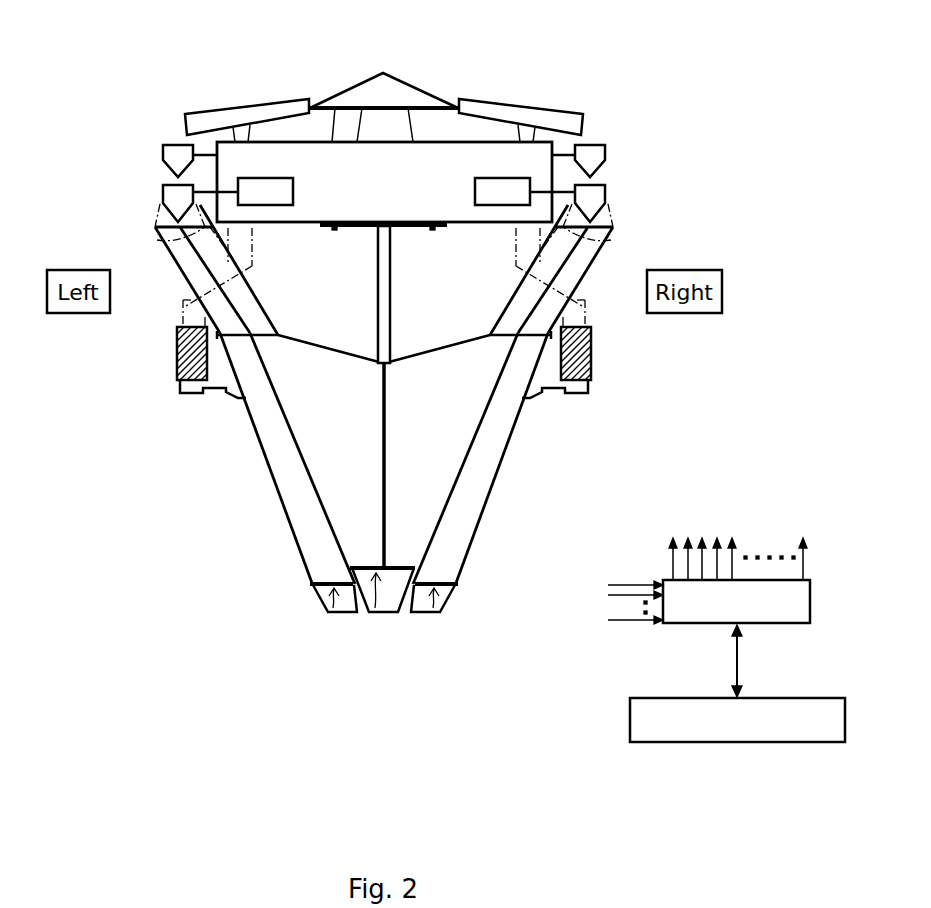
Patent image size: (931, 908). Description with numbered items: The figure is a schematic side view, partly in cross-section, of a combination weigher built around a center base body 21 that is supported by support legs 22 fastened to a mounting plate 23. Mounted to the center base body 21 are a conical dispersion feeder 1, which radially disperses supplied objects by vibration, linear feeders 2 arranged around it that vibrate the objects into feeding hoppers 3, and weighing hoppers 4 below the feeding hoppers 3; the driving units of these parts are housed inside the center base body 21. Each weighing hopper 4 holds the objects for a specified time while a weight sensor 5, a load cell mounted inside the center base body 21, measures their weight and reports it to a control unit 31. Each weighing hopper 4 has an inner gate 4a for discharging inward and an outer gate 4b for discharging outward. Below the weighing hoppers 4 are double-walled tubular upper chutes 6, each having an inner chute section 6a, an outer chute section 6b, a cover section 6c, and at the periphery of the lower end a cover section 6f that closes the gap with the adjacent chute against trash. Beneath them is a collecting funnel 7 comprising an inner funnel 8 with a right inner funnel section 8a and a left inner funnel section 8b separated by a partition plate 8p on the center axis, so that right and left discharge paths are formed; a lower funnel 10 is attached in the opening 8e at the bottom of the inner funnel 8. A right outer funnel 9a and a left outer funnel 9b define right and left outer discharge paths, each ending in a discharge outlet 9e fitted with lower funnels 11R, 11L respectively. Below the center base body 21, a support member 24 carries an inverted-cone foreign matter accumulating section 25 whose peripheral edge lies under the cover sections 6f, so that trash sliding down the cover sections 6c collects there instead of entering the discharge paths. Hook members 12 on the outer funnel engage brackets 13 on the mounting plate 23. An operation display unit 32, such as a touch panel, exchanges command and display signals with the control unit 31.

The dispersion feeder 1 is at (411, 84).
The linear feeder 2 is at (257, 102).
The feeding hopper 3 is at (164, 149).
The weighing hopper 4 is at (164, 190).
The inner gate 4a is at (157, 240).
The outer gate 4b is at (157, 212).
The weight sensor 5 is at (294, 192).
The upper chute 6 is at (608, 268).
The inner chute section 6a is at (190, 262).
The outer chute section 6b is at (198, 278).
The cover section 6c is at (215, 292).
The cover section 6f is at (284, 334).
The collecting funnel 7 is at (611, 464).
The inner funnel 8 is at (560, 483).
The right inner funnel section 8a is at (463, 468).
The left inner funnel section 8b is at (308, 473).
The opening 8e is at (375, 613).
The partition plate 8p is at (386, 530).
The right outer funnel 9a is at (512, 434).
The left outer funnel 9b is at (282, 498).
The discharge outlet 9e is at (331, 613).
The lower funnel 10 is at (392, 613).
The lower funnel 11L is at (322, 597).
The lower funnel 11R is at (446, 597).
The hook member 12 is at (228, 396).
The bracket 13 is at (180, 384).
The center base body 21 is at (334, 108).
The support leg 22 is at (586, 298).
The mounting plate 23 is at (594, 357).
The support member 24 is at (392, 262).
The foreign matter accumulating section 25 is at (338, 353).
The control unit 31 is at (811, 600).
The operation display unit 32 is at (796, 742).